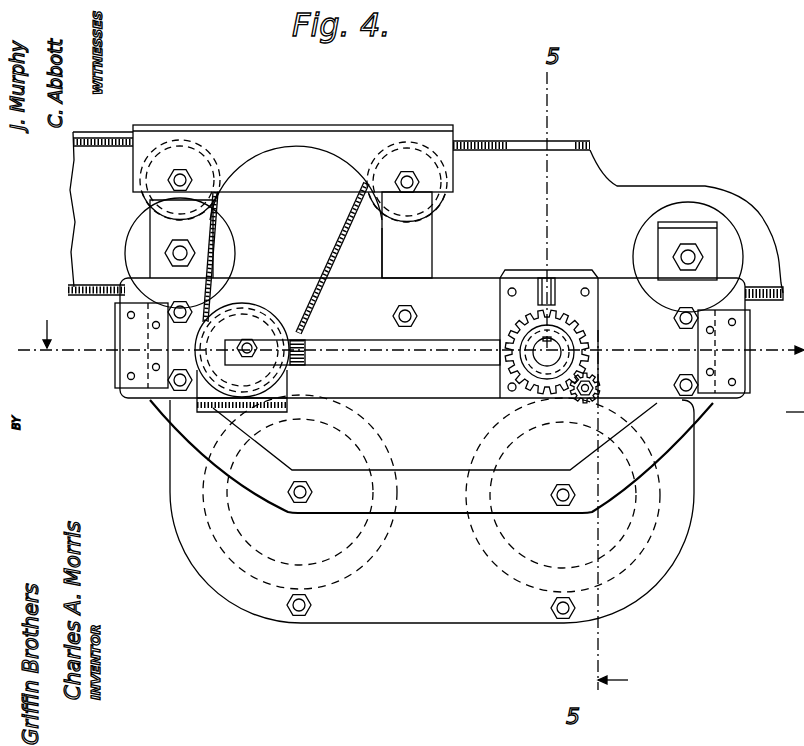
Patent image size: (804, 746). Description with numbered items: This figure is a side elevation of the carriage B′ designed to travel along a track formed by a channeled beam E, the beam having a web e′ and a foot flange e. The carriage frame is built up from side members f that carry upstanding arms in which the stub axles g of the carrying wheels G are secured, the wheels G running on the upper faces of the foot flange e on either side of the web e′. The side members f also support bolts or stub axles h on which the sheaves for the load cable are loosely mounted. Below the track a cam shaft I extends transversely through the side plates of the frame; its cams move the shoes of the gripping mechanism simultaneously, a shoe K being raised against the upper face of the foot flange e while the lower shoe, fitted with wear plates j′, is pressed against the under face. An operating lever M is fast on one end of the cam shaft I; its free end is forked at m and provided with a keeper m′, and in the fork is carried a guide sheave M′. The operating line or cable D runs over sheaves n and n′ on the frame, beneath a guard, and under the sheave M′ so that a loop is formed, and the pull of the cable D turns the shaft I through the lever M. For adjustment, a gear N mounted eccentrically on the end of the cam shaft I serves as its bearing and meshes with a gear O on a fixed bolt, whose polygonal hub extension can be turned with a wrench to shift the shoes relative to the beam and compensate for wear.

The channeled beam E is at (573, 158).
The web e′ is at (83, 163).
The foot flange e is at (72, 290).
The operating line or cable D is at (488, 142).
The sheave n is at (140, 203).
The sheave n′ is at (433, 203).
The carriage B′ is at (438, 263).
The carrying wheels G is at (230, 248).
The stub axles g is at (173, 252).
The guide sheave M′ is at (243, 304).
The keeper m′ is at (280, 386).
The operating lever M is at (380, 355).
The shoe K is at (556, 273).
The wear plates j′ is at (540, 287).
The gear N is at (573, 332).
The cam shaft I is at (540, 352).
The gear O is at (600, 383).
The side members f is at (443, 512).
The bolts or stub axles h is at (314, 492).
The forked end m is at (791, 433).